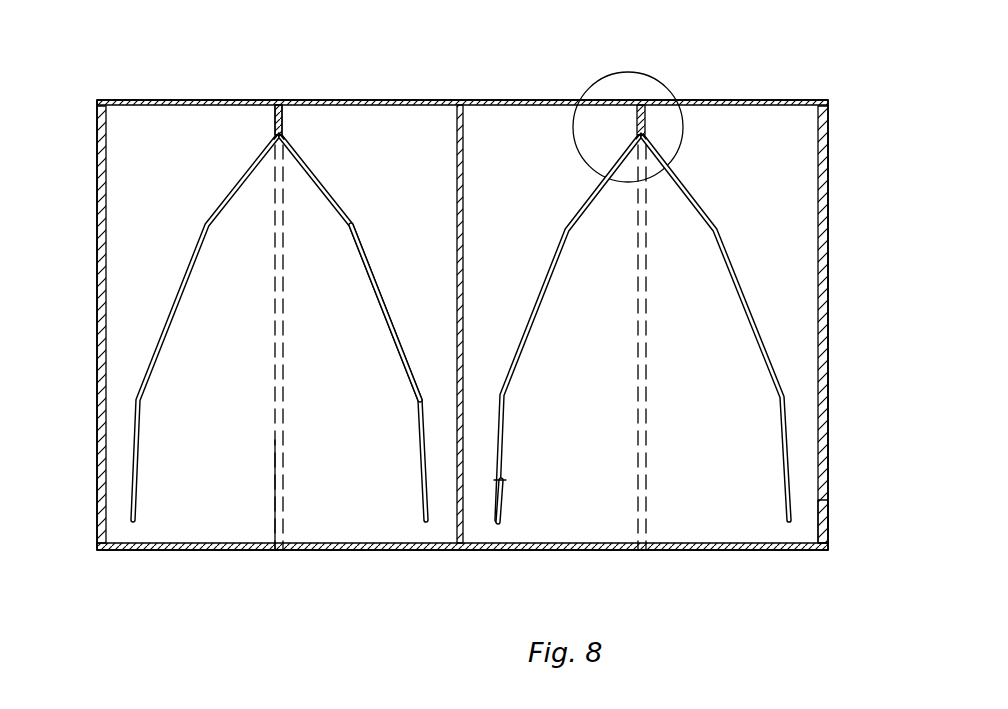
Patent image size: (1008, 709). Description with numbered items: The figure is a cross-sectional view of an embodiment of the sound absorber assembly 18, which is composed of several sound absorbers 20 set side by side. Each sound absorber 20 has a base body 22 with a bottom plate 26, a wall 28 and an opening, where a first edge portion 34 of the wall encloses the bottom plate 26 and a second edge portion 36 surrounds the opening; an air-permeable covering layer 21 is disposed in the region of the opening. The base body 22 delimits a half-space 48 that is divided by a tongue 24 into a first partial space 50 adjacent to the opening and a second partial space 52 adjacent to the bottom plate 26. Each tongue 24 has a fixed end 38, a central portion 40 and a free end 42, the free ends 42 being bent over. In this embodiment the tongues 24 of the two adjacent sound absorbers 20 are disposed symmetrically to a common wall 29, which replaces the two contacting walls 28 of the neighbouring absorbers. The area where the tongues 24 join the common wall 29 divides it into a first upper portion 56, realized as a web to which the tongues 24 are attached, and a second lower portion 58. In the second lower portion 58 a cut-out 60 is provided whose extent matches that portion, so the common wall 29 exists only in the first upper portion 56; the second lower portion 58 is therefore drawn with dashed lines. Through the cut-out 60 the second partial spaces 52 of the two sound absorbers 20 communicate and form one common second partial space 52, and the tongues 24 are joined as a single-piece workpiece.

The sound absorber assembly 18 is at (290, 77).
The sound absorber 20 is at (160, 557).
The covering layer 21 is at (344, 102).
The base body 22 is at (313, 554).
The tongue 24 is at (347, 218).
The bottom plate 26 is at (382, 550).
The wall 28 is at (96, 216).
The common wall 29 is at (290, 112).
The first edge portion 34 is at (834, 519).
The second edge portion 36 is at (832, 108).
The fixed end 38 is at (300, 142).
The central portion 40 is at (388, 284).
The free end 42 is at (508, 502).
The half-space 48 is at (728, 128).
The first partial space 50 is at (643, 296).
The second partial space 52 is at (582, 347).
The first upper portion 56 is at (312, 105).
The second lower portion 58 is at (281, 357).
The cut-out 60 is at (280, 464).